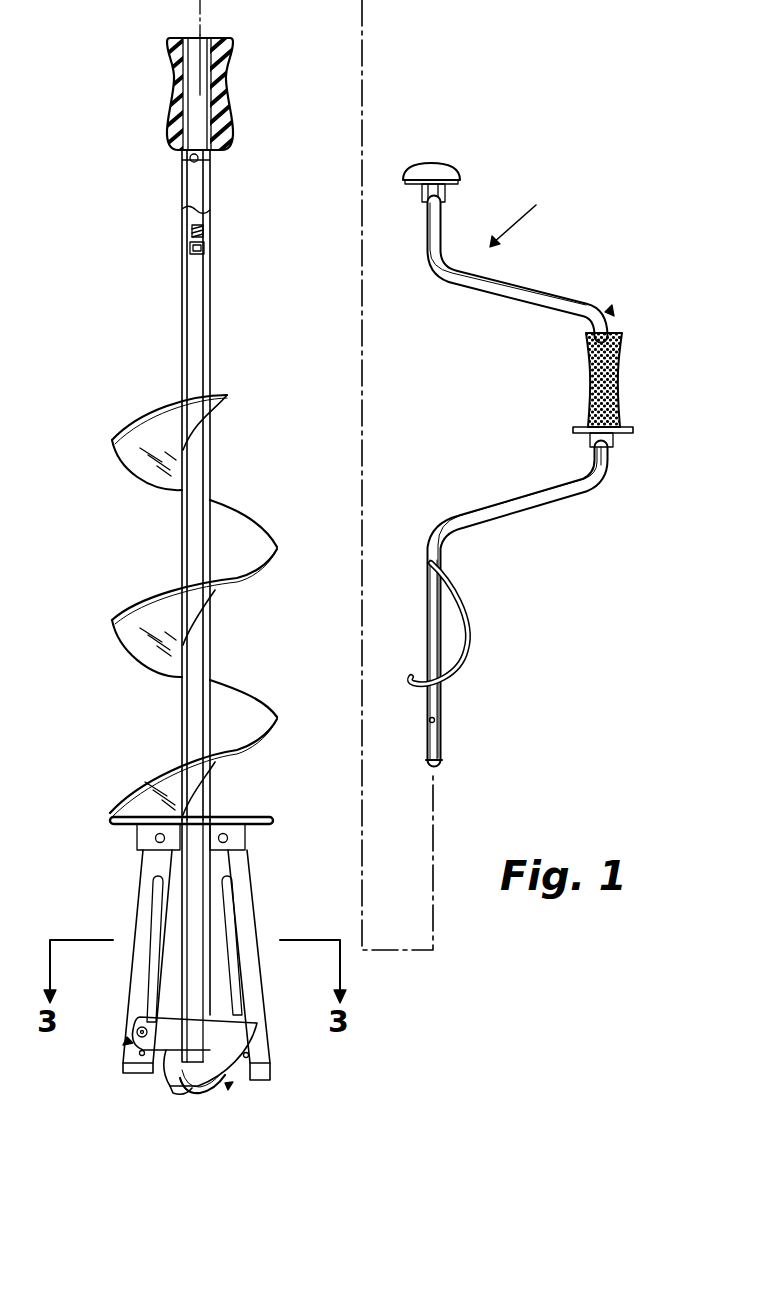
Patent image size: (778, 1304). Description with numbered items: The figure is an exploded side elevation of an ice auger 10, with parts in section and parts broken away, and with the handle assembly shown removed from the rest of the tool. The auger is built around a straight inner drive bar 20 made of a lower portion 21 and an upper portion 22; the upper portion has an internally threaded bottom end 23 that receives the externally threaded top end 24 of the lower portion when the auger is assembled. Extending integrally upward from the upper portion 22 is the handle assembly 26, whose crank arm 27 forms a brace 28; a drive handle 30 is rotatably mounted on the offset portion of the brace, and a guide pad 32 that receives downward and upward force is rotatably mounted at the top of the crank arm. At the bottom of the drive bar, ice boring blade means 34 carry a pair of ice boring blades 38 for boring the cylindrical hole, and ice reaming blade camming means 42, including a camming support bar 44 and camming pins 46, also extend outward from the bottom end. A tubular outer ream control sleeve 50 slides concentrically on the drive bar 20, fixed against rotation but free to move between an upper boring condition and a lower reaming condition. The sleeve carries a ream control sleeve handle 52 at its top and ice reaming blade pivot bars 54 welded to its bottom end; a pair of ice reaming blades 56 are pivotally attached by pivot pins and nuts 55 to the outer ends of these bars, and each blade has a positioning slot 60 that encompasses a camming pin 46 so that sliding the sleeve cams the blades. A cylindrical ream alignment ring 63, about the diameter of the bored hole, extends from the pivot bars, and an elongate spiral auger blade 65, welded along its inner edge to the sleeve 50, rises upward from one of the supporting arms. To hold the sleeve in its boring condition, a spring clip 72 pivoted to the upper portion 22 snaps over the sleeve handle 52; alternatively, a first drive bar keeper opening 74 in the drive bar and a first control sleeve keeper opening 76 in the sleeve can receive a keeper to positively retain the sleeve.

The ice auger 10 is at (525, 217).
The straight inner drive bar 20 is at (190, 892).
The lower portion of the drive bar 21 is at (205, 248).
The upper portion of the drive bar 22 is at (428, 625).
The internally threaded bottom end 23 is at (442, 748).
The externally threaded top end 24 is at (205, 232).
The handle assembly 26 is at (608, 310).
The crank arm 27 is at (515, 290).
The brace 28 is at (605, 457).
The drive handle 30 is at (622, 368).
The guide pad 32 is at (428, 172).
The ice boring blade means 34 is at (225, 1083).
The ice boring blade 38 is at (225, 1038).
The ice reaming blade camming means 42 is at (127, 1037).
The camming support bar 44 is at (178, 1080).
The ice reaming blade camming pin 46 is at (140, 1026).
The tubular outer ream control sleeve 50 is at (190, 467).
The ream control sleeve handle 52 is at (176, 84).
The ice reaming blade pivot bar 54 is at (232, 838).
The reaming blade pivot pins and nuts 55 is at (152, 838).
The ice reaming blade 56 is at (143, 915).
The positioning slot 60 is at (238, 987).
The cylindrical ream alignment ring 63 is at (143, 778).
The spiral auger blade 65 is at (122, 630).
The spring clip 72 is at (470, 625).
The first drive bar keeper opening 74 is at (438, 718).
The first control sleeve keeper opening 76 is at (189, 158).